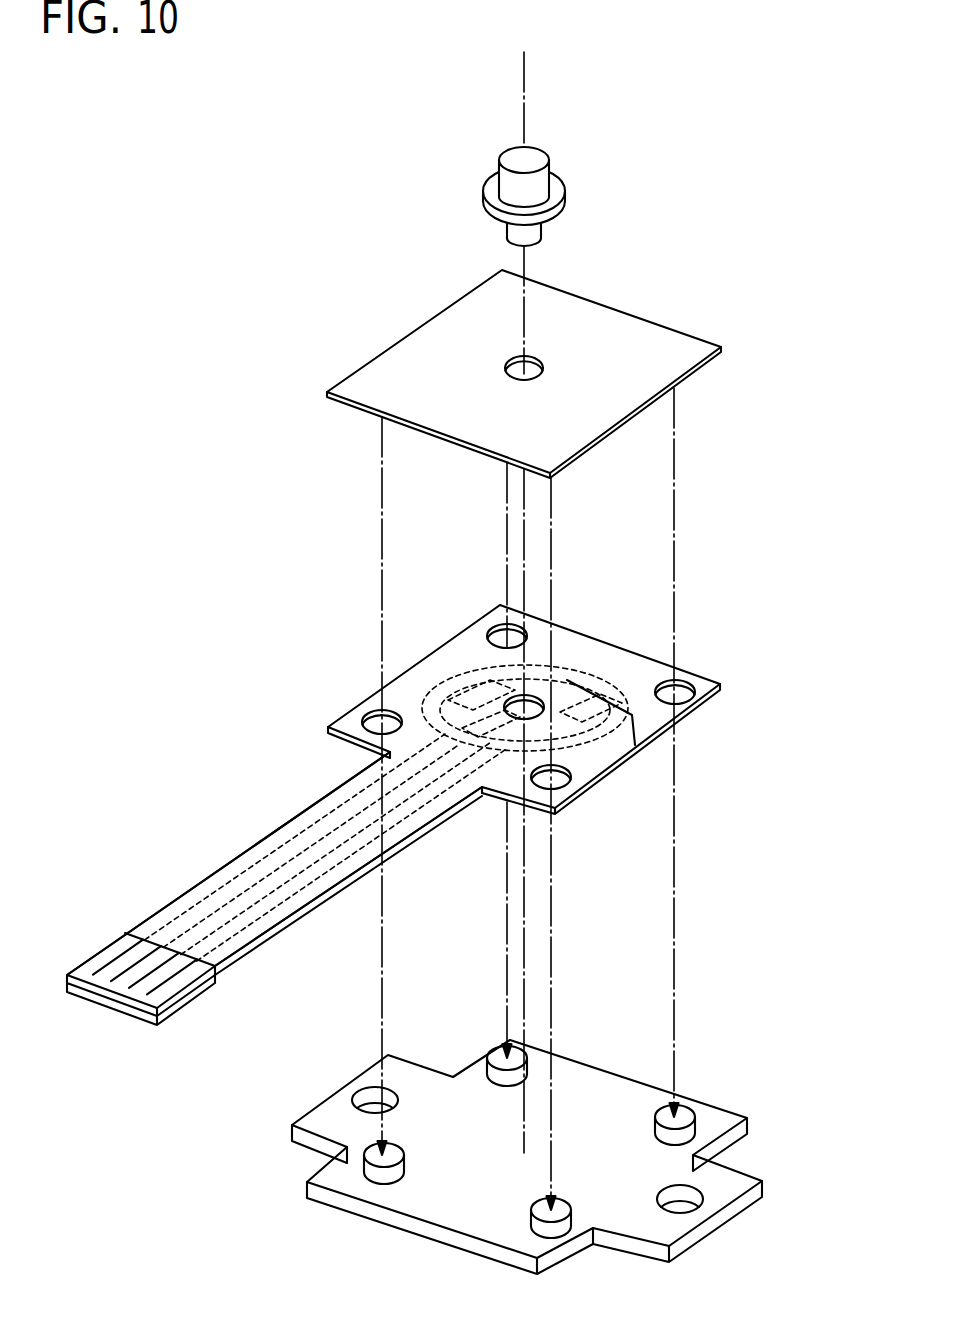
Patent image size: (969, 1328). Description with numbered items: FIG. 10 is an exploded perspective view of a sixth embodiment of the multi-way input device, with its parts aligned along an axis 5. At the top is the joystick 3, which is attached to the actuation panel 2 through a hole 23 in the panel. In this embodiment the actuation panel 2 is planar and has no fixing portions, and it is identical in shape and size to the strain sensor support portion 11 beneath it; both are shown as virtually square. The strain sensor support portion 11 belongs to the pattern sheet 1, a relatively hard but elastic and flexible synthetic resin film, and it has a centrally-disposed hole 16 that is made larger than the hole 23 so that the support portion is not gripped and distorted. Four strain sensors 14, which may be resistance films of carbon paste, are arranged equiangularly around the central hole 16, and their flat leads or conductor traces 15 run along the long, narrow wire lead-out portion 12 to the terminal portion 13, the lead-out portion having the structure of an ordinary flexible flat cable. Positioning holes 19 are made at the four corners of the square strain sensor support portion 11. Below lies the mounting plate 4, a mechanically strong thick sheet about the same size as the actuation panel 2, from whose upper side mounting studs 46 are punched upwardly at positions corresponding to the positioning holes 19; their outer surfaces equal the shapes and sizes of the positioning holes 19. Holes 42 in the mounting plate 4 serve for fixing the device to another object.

The pattern sheet 1 is at (414, 806).
The actuation panel 2 is at (500, 374).
The joystick 3 is at (574, 185).
The mounting plate 4 is at (496, 1151).
The axis 5 is at (524, 96).
The strain sensor support portion 11 is at (412, 683).
The wire lead-out portion 12 is at (322, 803).
The terminal portion 13 is at (150, 997).
The strain sensors 14 is at (588, 724).
The conductor traces 15 is at (283, 907).
The centrally-disposed hole 16 is at (512, 697).
The positioning holes 19 is at (500, 632).
The hole 23 is at (505, 370).
The holes 42 is at (372, 1090).
The mounting studs 46 is at (500, 1056).